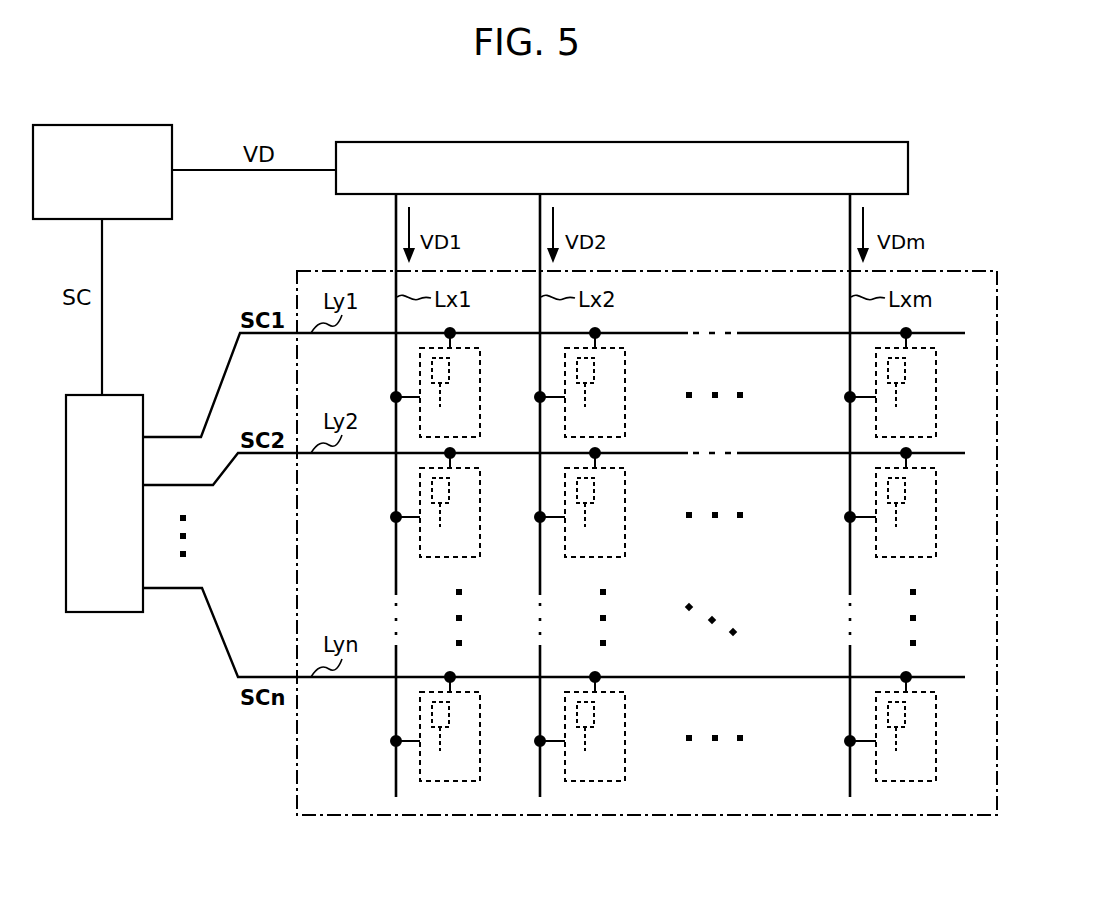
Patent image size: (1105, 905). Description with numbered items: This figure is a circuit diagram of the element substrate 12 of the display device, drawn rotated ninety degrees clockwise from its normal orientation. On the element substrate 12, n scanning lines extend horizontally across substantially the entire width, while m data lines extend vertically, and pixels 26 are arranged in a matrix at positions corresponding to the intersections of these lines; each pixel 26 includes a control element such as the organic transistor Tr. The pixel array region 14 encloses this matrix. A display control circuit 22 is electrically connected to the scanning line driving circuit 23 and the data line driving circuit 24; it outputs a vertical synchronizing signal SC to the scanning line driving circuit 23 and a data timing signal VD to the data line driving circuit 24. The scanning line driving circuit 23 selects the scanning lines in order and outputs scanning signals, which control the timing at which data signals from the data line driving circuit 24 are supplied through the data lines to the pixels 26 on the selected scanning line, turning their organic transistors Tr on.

The element substrate 12 is at (984, 130).
The pixel region (pixel array / display panel) 14 is at (997, 331).
The display control circuit 22 is at (133, 125).
The scanning line driving circuit 23 is at (116, 612).
The data line driving circuit 24 is at (853, 142).
The pixel 26 is at (480, 375).